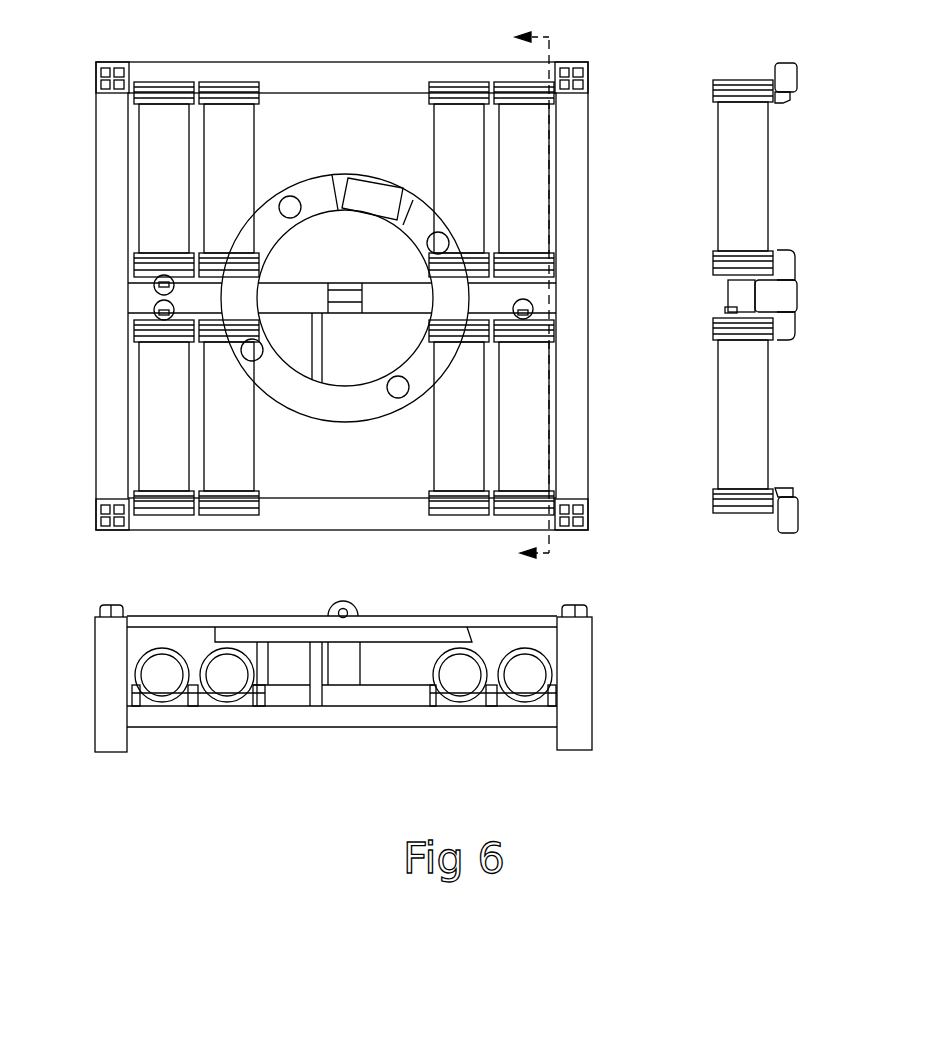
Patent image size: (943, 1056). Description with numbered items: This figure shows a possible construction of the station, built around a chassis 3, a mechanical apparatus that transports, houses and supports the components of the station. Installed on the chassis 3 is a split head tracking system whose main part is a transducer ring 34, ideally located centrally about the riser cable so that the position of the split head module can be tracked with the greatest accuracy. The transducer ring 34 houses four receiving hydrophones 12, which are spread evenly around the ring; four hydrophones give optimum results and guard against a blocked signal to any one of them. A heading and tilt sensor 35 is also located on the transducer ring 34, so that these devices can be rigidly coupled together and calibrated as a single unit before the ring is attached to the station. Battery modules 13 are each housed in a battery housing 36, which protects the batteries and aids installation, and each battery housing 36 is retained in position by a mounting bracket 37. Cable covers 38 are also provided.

The chassis 3 is at (98, 448).
The receiving hydrophones 12 is at (290, 196).
The battery modules 13 is at (155, 663).
The transducer ring 34 is at (426, 200).
The heading and tilt sensor 35 is at (370, 177).
The battery housing 36 is at (769, 207).
The mounting bracket 37 is at (795, 266).
The cable covers 38 is at (728, 292).